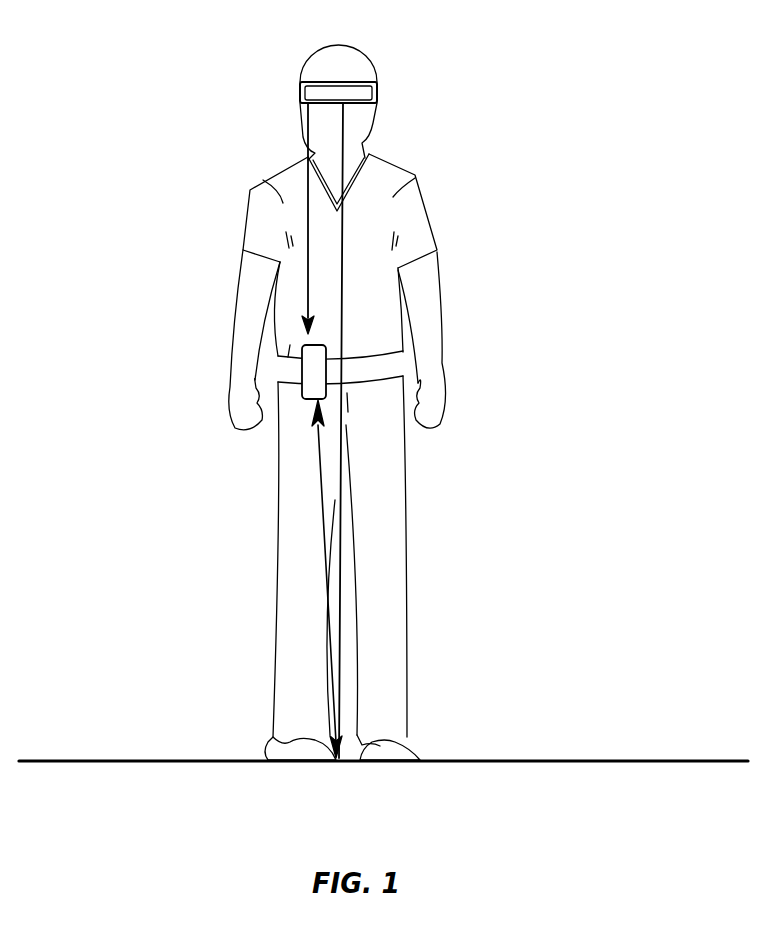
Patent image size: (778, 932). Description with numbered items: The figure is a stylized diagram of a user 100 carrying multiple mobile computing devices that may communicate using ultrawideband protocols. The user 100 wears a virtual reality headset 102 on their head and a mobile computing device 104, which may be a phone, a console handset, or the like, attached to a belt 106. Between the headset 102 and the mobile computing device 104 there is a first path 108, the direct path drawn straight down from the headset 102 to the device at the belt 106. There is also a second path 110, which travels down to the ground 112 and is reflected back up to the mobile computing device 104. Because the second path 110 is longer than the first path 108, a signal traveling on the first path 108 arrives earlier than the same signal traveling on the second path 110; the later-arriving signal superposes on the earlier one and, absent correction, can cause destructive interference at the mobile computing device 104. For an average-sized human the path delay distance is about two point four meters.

The user 100 is at (350, 56).
The virtual reality headset 102 is at (378, 91).
The mobile computing device 104 is at (308, 388).
The belt 106 is at (393, 366).
The first path 108 is at (308, 220).
The second path 110 is at (340, 473).
The ground 112 is at (615, 762).